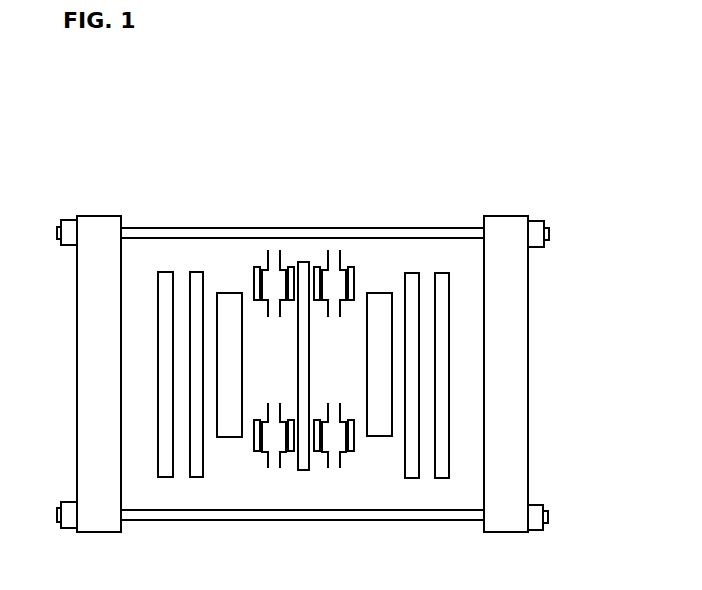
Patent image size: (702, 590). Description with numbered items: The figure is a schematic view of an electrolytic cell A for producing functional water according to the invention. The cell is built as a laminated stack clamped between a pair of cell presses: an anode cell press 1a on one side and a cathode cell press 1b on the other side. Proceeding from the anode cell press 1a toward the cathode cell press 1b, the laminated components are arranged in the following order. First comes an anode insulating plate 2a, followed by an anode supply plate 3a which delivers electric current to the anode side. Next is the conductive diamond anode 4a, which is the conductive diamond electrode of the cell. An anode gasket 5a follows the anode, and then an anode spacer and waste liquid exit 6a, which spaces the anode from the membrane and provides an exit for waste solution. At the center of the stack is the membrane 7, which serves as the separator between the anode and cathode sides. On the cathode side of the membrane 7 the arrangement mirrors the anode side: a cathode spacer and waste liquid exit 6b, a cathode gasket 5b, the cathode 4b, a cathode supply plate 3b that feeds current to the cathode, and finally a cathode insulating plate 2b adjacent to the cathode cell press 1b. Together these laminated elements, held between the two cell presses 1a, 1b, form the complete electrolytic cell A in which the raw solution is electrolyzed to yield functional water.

The electrolytic cell A is at (517, 148).
The anode cell press 1a is at (516, 374).
The cathode cell press 1b is at (89, 374).
The anode insulating plate 2a is at (443, 273).
The cathode insulating plate 2b is at (164, 272).
The anode supply plate 3a is at (413, 273).
The cathode supply plate 3b is at (196, 272).
The conductive diamond anode 4a is at (380, 293).
The cathode 4b is at (230, 293).
The anode gasket 5a is at (349, 303).
The cathode gasket 5b is at (289, 303).
The anode spacer and waste liquid exit 6a is at (334, 250).
The cathode spacer and waste liquid exit 6b is at (274, 250).
The membrane 7 is at (304, 262).